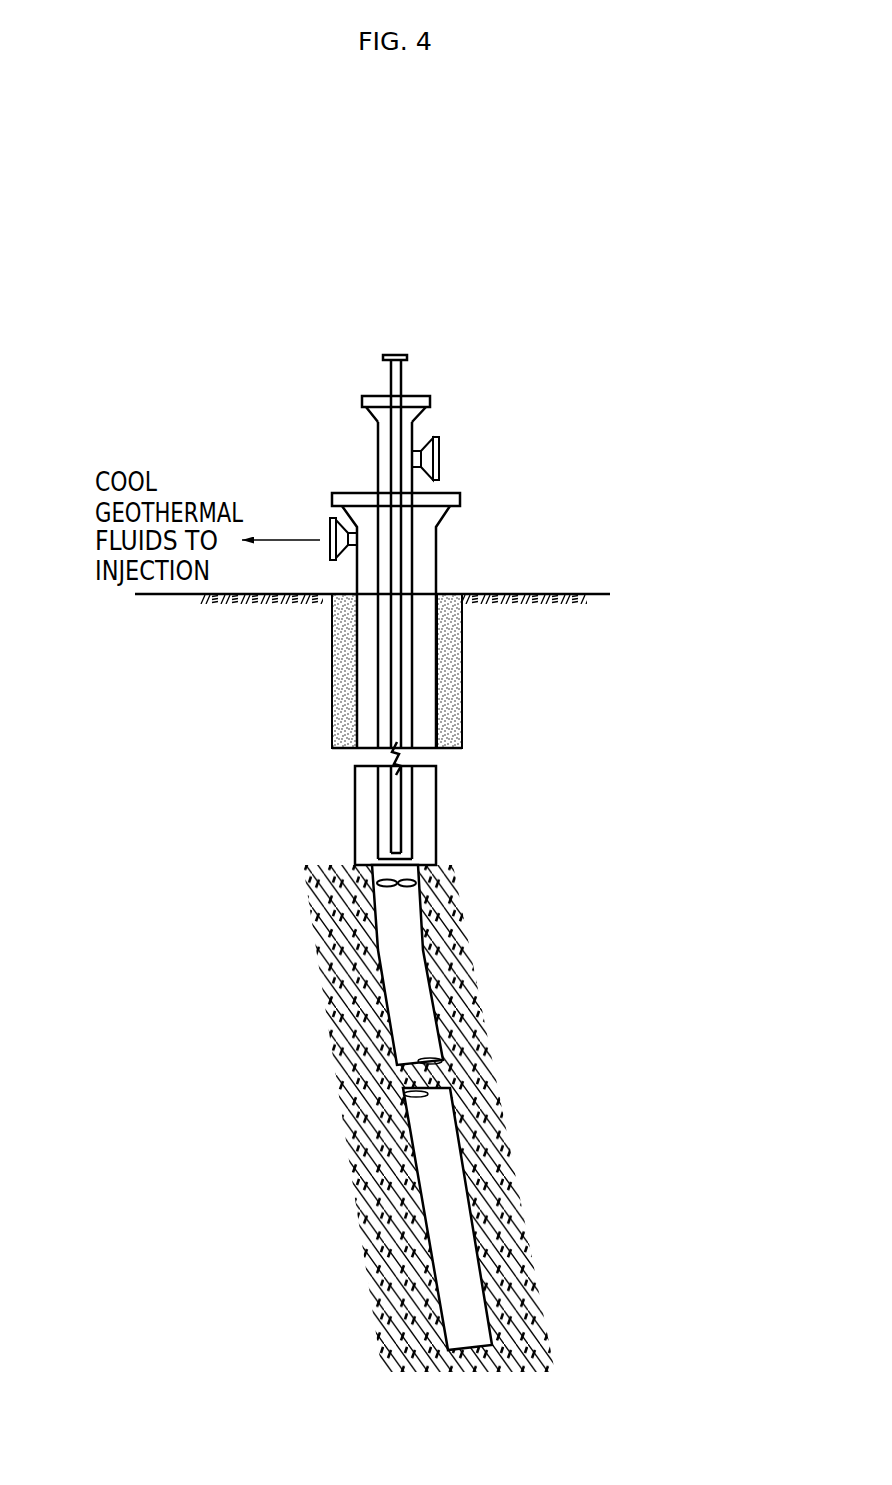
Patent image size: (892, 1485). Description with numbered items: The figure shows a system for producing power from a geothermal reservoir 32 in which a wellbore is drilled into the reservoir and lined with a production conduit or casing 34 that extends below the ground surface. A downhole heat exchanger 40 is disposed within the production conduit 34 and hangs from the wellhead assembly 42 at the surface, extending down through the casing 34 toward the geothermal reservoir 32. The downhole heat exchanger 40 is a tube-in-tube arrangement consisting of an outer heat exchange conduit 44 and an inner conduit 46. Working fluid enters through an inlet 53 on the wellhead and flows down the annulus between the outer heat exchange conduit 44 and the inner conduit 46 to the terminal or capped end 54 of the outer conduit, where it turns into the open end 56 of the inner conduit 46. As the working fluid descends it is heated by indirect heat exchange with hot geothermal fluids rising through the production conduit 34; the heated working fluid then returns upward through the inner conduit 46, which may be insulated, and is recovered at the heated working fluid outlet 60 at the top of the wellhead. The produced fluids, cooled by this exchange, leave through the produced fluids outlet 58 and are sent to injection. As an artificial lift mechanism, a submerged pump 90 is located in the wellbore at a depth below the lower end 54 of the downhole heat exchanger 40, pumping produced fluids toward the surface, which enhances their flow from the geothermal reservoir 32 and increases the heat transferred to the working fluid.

The geothermal reservoir 32 is at (355, 1118).
The production conduit 34 is at (355, 693).
The downhole heat exchanger 40 is at (375, 390).
The wellhead assembly 42 is at (310, 440).
The outer heat exchange conduit 44 is at (413, 662).
The inner conduit 46 is at (402, 610).
The inlet 53 is at (437, 430).
The capped end 54 is at (405, 867).
The open end 56 is at (378, 868).
The produced fluids outlet 58 is at (329, 562).
The heated working fluid outlet 60 is at (408, 352).
The submerged pump 90 is at (509, 1107).